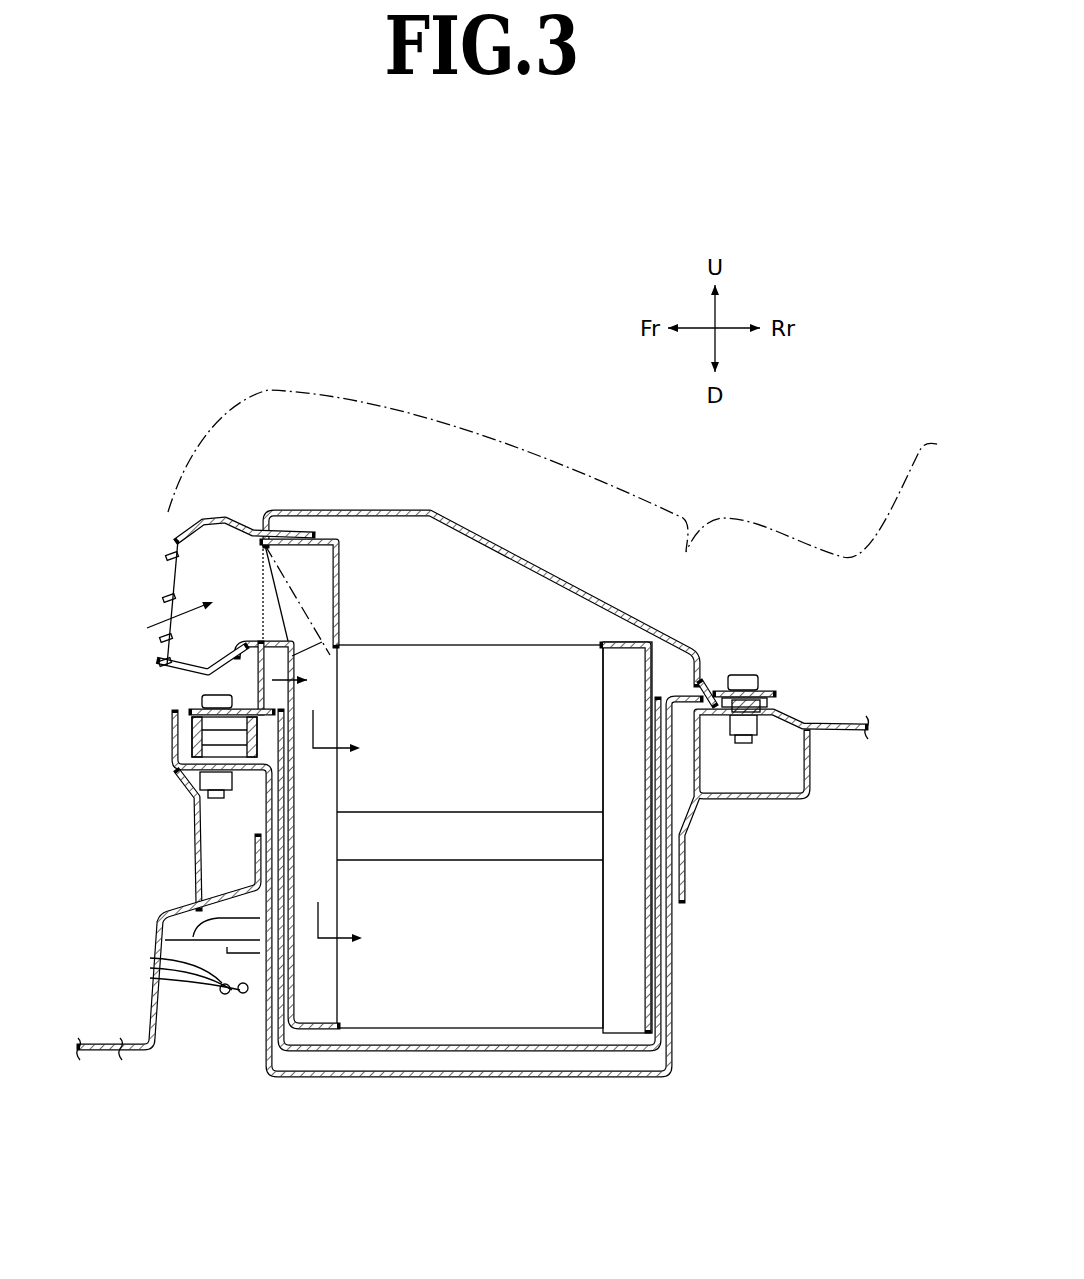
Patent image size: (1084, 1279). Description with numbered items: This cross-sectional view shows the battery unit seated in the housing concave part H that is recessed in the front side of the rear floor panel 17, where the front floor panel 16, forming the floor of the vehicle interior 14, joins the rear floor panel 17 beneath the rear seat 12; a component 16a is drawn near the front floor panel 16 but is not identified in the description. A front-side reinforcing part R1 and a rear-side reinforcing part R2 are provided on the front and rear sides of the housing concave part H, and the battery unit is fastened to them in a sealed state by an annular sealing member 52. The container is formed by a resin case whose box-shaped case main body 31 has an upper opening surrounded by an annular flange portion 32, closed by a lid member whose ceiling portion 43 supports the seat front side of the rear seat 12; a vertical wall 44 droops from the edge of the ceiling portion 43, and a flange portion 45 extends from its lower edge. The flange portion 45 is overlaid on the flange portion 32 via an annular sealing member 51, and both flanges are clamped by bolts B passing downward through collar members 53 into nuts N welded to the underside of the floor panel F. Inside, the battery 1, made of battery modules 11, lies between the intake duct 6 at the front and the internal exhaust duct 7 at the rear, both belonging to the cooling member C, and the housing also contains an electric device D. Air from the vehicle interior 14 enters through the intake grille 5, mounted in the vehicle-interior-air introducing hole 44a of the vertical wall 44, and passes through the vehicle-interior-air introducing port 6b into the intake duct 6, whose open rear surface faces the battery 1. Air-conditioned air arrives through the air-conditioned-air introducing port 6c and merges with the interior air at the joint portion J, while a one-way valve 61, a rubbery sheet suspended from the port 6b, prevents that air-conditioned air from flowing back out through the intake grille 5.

The battery 1 is at (470, 915).
The battery module 11 is at (490, 762).
The rear seat 12 is at (205, 428).
The vehicle interior 14 is at (124, 535).
The front floor panel 16 is at (116, 1056).
The wire harness 16a is at (152, 963).
The rear floor panel 17 is at (808, 724).
The case main body 31 is at (424, 1050).
The flange portion 32 is at (684, 706).
The ceiling portion 43 is at (565, 582).
The vertical wall 44 is at (712, 678).
The vehicle-interior-air introducing hole 44a is at (243, 540).
The flange portion 45 is at (712, 688).
The intake grille 5 is at (173, 580).
The annular sealing member 51 is at (742, 674).
The annular sealing member 52 is at (702, 716).
The collar member 53 is at (190, 732).
The intake duct 6 is at (341, 577).
The one-way valve 61 is at (277, 592).
The vehicle-interior-air introducing port 6b is at (283, 620).
The air-conditioned-air introducing port 6c is at (293, 700).
The internal exhaust duct 7 is at (630, 660).
The bolt B is at (217, 697).
The cooling member C is at (354, 571).
The electric device D is at (432, 641).
The floor panel F is at (110, 1040).
The housing concave part H is at (617, 1063).
The joint portion J is at (320, 672).
The nut N is at (188, 780).
The front-side reinforcing part R1 is at (197, 850).
The rear-side reinforcing part R2 is at (813, 762).